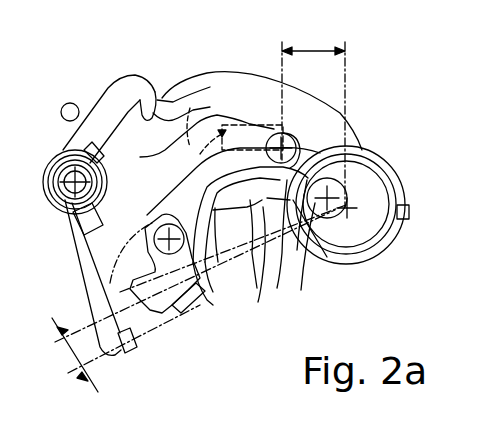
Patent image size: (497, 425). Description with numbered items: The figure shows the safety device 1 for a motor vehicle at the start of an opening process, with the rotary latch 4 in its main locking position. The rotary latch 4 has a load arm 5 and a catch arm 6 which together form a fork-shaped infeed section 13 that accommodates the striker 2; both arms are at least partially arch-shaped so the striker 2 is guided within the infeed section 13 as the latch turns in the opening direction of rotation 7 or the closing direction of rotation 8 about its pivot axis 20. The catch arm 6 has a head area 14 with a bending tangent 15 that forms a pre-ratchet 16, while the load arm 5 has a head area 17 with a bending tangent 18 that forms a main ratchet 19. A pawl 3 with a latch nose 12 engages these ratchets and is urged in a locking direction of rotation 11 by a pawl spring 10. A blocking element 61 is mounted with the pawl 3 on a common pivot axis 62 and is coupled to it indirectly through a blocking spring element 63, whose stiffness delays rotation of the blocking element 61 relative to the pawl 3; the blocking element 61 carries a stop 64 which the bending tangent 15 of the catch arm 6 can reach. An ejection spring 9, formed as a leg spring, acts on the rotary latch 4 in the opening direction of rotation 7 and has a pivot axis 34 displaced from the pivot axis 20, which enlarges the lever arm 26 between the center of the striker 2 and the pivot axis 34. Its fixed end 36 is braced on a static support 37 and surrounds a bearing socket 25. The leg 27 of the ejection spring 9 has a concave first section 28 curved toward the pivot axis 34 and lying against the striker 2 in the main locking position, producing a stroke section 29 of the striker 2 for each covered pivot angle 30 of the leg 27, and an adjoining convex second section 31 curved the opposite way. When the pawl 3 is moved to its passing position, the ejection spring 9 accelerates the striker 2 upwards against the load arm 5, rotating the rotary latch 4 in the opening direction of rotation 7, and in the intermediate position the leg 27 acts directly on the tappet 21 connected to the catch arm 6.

The safety device 1 is at (90, 52).
The striker 2 is at (286, 137).
The pawl 3 is at (96, 106).
The rotary latch 4 is at (373, 260).
The load arm 5 is at (318, 110).
The catch arm 6 is at (266, 285).
The opening direction of rotation 7 is at (404, 164).
The closing direction of rotation 8 is at (400, 152).
The ejection spring 9 is at (327, 262).
The pawl spring 10 is at (95, 176).
The locking direction of rotation 11 is at (40, 208).
The latch nose 12 is at (146, 96).
The infeed section 13 is at (246, 132).
The head area 14 is at (176, 308).
The bending tangent 15 is at (130, 291).
The pre-ratchet 16 is at (130, 274).
The head area 17 is at (162, 96).
The bending tangent 18 is at (126, 122).
The main ratchet 19 is at (192, 106).
The pivot axis of the rotary latch 20 is at (329, 207).
The tappet 21 is at (162, 228).
The bearing socket 25 is at (270, 285).
The lever arm 26 is at (322, 48).
The leg 27 is at (214, 300).
The first section 28 is at (292, 235).
The stroke section 29 is at (207, 141).
The pivot angle 30 is at (72, 341).
The second section 31 is at (262, 252).
The pivot axis of the ejection spring 34 is at (360, 228).
The fixed end 36 is at (404, 222).
The static support 37 is at (398, 200).
The blocking element 61 is at (82, 283).
The pivot axis 62 is at (68, 158).
The blocking spring element 63 is at (60, 176).
The stop 64 is at (132, 356).